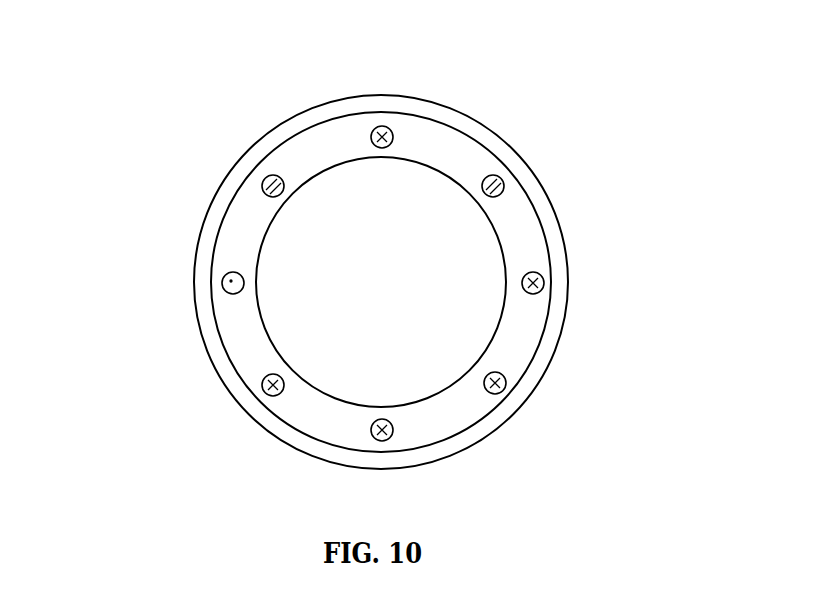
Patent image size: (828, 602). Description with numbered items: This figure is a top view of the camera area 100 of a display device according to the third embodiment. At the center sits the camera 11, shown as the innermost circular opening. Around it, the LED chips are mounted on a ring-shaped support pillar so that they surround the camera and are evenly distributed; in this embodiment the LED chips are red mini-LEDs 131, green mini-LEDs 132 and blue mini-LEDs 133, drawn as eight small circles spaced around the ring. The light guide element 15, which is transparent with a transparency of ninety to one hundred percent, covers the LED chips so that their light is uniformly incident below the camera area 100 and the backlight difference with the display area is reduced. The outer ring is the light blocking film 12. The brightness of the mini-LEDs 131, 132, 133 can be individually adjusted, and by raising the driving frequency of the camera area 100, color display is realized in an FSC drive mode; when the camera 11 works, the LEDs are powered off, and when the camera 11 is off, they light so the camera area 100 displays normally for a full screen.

The camera area 100 is at (207, 104).
The camera 11 is at (283, 267).
The light blocking film 12 is at (208, 325).
The light guide element 15 is at (518, 252).
The red mini-LED 131 is at (383, 432).
The green mini-LED 132 is at (495, 383).
The blue mini-LED 133 is at (272, 385).